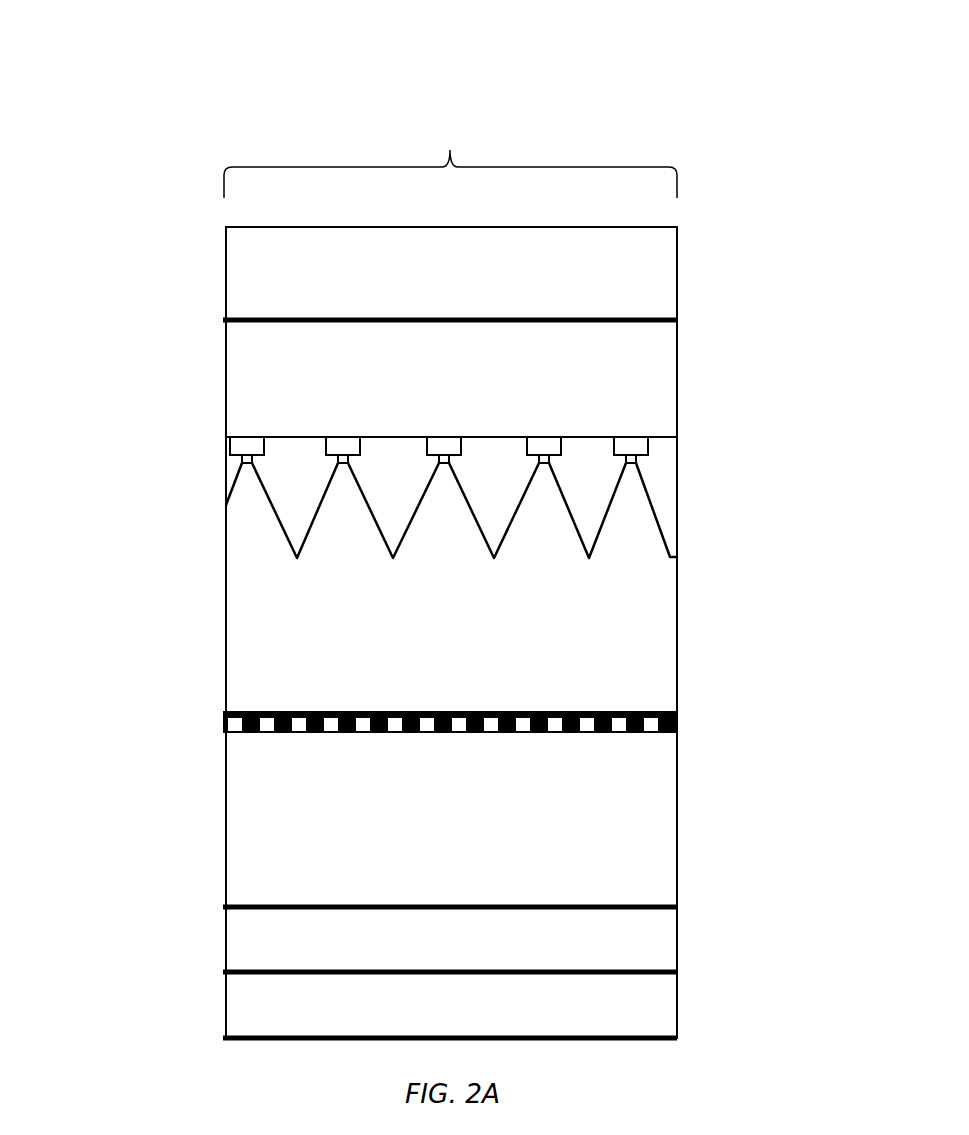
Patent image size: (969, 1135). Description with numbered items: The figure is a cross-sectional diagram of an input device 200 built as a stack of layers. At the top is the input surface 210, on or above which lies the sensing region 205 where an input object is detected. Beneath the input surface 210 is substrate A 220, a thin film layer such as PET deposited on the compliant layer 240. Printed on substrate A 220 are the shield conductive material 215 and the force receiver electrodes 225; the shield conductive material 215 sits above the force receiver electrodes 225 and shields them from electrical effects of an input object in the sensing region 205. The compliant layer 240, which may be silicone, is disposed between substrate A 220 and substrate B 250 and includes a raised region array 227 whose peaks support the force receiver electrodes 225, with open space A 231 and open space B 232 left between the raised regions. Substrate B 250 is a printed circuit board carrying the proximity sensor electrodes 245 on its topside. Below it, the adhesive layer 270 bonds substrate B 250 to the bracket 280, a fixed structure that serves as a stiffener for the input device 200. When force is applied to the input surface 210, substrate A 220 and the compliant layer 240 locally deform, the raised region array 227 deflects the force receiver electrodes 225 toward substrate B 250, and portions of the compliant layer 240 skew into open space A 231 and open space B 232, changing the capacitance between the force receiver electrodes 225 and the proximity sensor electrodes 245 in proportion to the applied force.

The input device 200 is at (150, 66).
The sensing region 205 is at (450, 148).
The input surface 210 is at (467, 291).
The shield conductive material 215 is at (330, 430).
The substrate A 220 is at (467, 383).
The force receiver electrodes 225 is at (325, 470).
The raised region array 227 is at (578, 510).
The open space A 231 is at (408, 505).
The open space B 232 is at (509, 505).
The compliant layer 240 is at (471, 678).
The proximity sensor electrodes 245 is at (610, 738).
The substrate B 250 is at (467, 828).
The adhesive layer 270 is at (467, 958).
The bracket 280 is at (467, 1025).